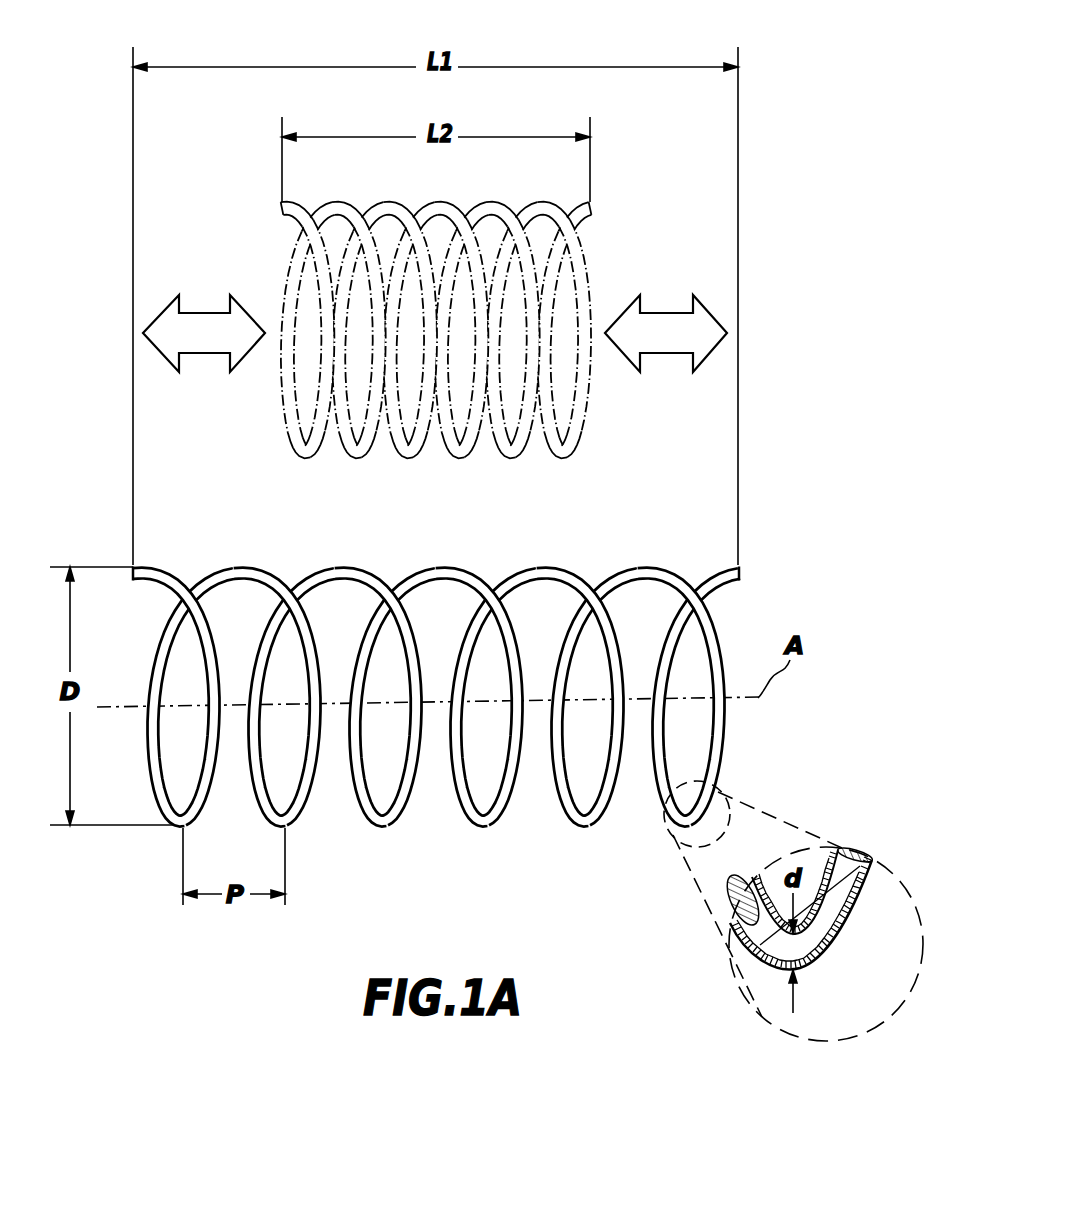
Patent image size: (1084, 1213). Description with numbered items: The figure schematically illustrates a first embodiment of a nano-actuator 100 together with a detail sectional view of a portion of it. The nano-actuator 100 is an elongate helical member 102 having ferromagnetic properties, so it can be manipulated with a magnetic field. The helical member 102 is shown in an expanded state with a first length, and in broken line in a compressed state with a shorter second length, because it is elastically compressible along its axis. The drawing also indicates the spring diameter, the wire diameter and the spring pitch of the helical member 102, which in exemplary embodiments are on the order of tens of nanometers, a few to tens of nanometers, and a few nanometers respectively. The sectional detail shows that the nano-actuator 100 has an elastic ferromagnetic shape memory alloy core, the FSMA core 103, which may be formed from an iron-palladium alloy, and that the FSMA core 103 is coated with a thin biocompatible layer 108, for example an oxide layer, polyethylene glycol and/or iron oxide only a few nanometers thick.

The nano-actuator 100 is at (650, 553).
The helical member 102 is at (300, 448).
The FSMA core 103 is at (853, 850).
The biocompatible layer 108 is at (750, 947).